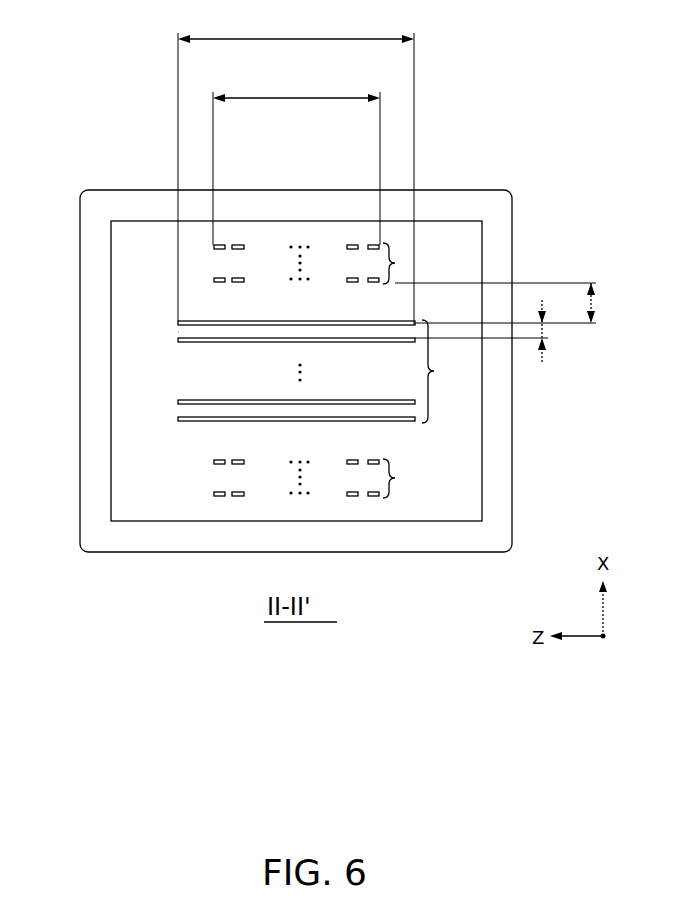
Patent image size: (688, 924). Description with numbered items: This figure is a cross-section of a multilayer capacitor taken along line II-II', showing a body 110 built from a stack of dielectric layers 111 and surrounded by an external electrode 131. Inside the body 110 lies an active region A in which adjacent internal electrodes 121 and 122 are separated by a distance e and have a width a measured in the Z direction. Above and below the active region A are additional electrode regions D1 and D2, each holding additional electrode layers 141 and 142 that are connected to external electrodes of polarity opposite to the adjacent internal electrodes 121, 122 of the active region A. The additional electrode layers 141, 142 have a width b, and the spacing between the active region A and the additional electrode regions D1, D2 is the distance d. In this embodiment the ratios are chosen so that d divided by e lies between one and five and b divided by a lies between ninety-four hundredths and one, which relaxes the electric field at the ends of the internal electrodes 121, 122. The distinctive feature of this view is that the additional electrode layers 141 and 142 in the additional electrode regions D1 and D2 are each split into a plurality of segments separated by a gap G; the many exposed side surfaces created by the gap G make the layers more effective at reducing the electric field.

The body 110 is at (262, 215).
The external electrode 131 is at (504, 216).
The additional electrode layer 141 is at (213, 247).
The additional electrode layer 142 is at (213, 462).
The internal electrode 122 is at (179, 321).
The dielectric layer 111 is at (180, 332).
The internal electrode 121 is at (180, 342).
The gap G is at (230, 242).
The additional electrode region D1 is at (401, 263).
The additional electrode region D2 is at (401, 478).
The active region A is at (438, 371).
The width of internal electrodes a is at (296, 170).
The width of additional electrode layers b is at (296, 160).
The distance between active region and additional electrode region d is at (505, 303).
The distance between adjacent internal electrodes e is at (489, 331).